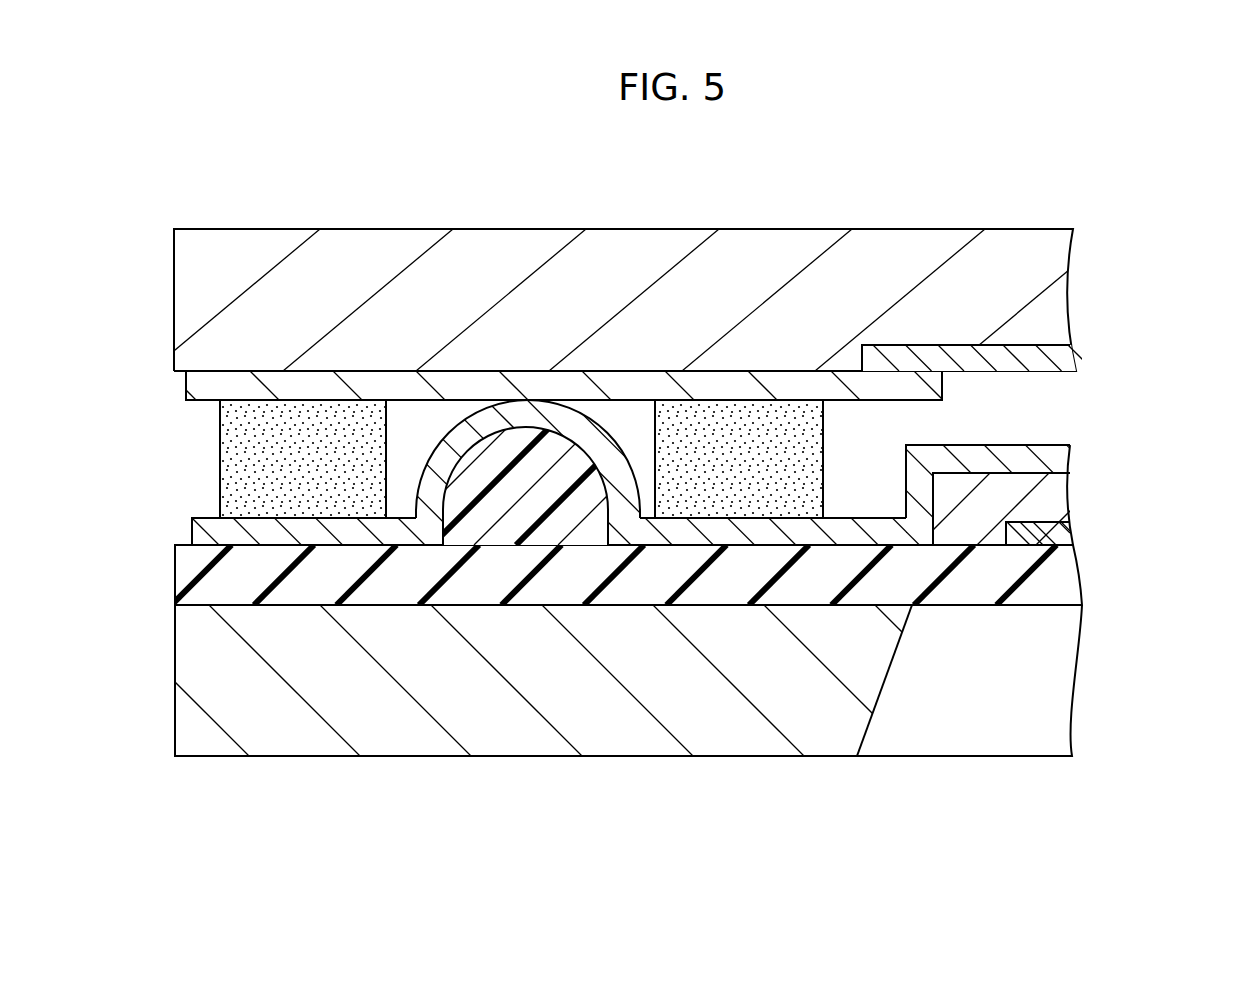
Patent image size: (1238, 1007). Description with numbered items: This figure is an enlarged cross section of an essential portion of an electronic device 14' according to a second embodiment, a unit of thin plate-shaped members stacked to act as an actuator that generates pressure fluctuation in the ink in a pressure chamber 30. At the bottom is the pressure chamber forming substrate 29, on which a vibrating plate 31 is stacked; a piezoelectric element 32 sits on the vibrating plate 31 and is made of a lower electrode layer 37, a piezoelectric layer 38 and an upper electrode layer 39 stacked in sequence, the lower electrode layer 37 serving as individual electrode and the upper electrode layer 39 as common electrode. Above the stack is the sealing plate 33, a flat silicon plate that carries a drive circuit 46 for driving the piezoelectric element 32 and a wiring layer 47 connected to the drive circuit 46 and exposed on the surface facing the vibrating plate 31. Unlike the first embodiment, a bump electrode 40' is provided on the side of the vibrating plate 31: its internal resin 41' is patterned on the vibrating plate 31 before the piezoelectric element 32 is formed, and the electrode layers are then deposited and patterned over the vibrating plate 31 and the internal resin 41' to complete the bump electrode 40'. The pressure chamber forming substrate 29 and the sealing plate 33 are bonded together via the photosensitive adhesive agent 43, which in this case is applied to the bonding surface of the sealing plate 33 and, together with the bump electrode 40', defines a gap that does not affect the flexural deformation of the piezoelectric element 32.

The electronic device 14' is at (656, 490).
The pressure chamber forming substrate 29 is at (832, 735).
The pressure chamber 30 is at (1040, 683).
The vibrating plate 31 is at (1040, 582).
The piezoelectric element 32 is at (642, 480).
The sealing plate 33 is at (1040, 268).
The lower electrode layer 37 is at (1052, 528).
The piezoelectric layer 38 is at (1052, 496).
The upper electrode layer 39 is at (1048, 458).
The bump electrode 40' is at (628, 360).
The internal resin 41' is at (533, 644).
The photosensitive adhesive agent 43 is at (305, 487).
The drive circuit 46 is at (1040, 362).
The wiring layer 47 is at (927, 390).